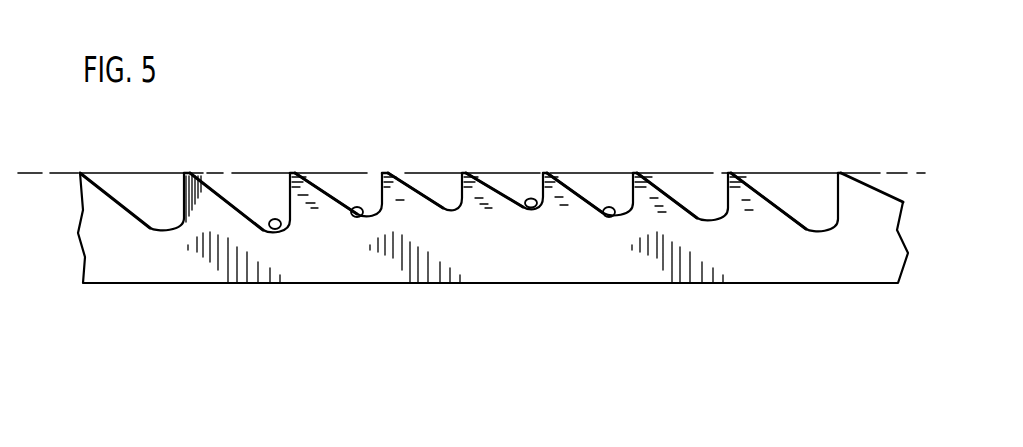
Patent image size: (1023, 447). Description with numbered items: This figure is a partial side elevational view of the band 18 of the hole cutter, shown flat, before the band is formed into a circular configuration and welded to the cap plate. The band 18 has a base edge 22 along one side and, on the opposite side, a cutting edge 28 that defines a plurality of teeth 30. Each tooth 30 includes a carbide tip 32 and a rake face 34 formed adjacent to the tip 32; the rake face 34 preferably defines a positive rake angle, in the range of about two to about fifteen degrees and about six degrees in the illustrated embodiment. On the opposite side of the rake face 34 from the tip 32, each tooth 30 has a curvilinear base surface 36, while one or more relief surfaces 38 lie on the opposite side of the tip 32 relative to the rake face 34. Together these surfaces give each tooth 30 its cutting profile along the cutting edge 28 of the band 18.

The band 18 is at (490, 158).
The base edge 22 is at (305, 283).
The cutting edge 28 is at (240, 172).
The tooth 30 is at (193, 222).
The carbide tip 32 is at (193, 171).
The rake face 34 is at (177, 179).
The curvilinear base surface 36 is at (276, 230).
The relief surface 38 is at (320, 190).